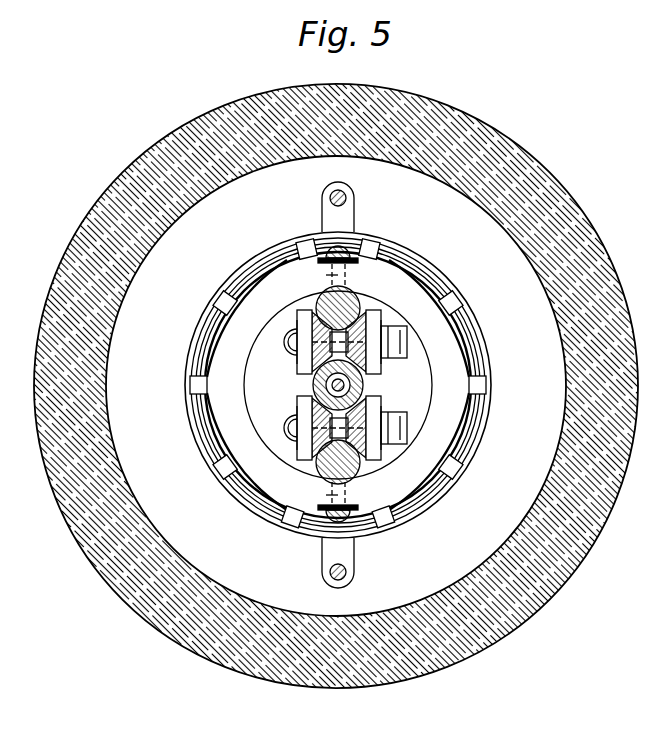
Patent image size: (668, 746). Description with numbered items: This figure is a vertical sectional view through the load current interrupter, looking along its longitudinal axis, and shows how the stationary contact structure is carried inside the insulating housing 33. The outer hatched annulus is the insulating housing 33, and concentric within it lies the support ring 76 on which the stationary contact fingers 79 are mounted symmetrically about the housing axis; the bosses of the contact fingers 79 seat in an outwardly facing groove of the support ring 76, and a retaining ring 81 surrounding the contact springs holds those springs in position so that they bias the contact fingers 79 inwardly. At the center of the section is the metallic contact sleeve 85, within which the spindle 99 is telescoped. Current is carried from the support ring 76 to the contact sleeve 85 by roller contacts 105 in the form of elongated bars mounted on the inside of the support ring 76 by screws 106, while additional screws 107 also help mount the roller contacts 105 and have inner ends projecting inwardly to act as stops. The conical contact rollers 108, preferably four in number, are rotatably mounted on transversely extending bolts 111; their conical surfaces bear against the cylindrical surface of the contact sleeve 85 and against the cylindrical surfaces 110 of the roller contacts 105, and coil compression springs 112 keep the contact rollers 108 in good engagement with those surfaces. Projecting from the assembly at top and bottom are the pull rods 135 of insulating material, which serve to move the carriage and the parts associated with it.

The insulating housing 33 is at (182, 133).
The support ring 76 is at (444, 423).
The contact fingers 79 is at (332, 238).
The retaining ring 81 is at (486, 342).
The metallic contact sleeve 85 is at (350, 389).
The spindle 99 is at (364, 383).
The roller contacts 105 is at (348, 298).
The screws 106 is at (346, 258).
The screws 107 is at (330, 280).
The conical contact rollers 108 is at (382, 326).
The cylindrical surfaces 110 is at (356, 332).
The bolts 111 is at (292, 341).
The coil compression springs 112 is at (412, 336).
The pull rods 135 is at (350, 196).